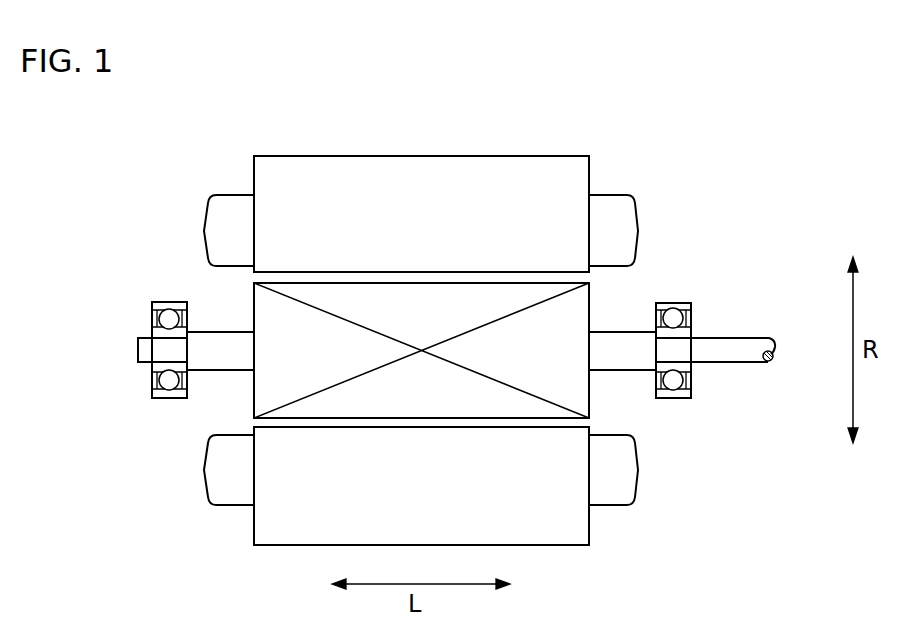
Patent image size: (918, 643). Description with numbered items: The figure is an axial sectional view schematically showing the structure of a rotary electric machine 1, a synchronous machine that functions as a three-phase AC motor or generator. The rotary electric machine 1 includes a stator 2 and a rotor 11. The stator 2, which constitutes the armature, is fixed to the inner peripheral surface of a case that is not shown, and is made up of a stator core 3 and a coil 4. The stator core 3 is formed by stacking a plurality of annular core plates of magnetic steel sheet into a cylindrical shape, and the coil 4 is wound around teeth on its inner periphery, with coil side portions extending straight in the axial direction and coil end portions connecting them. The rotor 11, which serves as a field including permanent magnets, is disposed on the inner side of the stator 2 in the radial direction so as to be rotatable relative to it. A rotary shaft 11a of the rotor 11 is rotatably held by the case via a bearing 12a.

The rotary electric machine 1 is at (162, 225).
The stator 2 is at (515, 155).
The stator core 3 is at (428, 170).
The coil 4 is at (625, 218).
The rotor 11 is at (582, 393).
The rotary shaft 11a is at (213, 358).
The bearing 12a is at (152, 311).